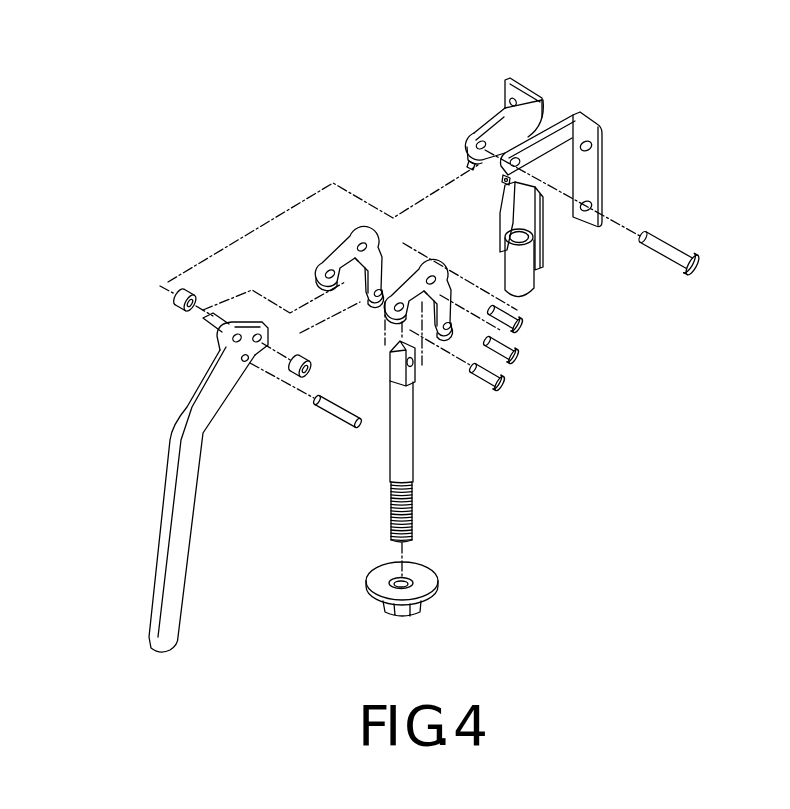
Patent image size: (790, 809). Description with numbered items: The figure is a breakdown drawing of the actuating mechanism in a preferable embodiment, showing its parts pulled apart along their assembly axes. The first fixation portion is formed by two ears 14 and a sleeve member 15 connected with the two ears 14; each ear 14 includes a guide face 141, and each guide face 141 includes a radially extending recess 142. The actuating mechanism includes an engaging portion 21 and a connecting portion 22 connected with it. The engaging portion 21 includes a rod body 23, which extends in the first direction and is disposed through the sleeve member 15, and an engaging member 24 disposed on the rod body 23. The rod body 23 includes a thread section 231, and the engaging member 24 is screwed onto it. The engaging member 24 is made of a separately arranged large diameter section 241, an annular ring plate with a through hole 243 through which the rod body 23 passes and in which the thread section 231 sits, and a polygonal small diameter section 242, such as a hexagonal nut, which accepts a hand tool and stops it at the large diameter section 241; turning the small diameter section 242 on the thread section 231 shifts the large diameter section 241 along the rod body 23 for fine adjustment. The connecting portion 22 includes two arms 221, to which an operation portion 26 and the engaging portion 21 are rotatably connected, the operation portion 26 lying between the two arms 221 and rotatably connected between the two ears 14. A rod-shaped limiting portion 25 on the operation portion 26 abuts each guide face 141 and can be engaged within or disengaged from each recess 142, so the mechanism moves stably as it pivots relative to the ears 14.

The ears 14 is at (541, 150).
The guide face 141 is at (541, 104).
The recess 142 is at (504, 181).
The sleeve member 15 is at (530, 286).
The engaging portion 21 is at (466, 539).
The connecting portion 22 is at (369, 210).
The arms 221 is at (343, 256).
The rod body 23 is at (447, 441).
The thread section 231 is at (410, 502).
The engaging member 24 is at (432, 612).
The large diameter section 241 is at (440, 590).
The small diameter section 242 is at (417, 612).
The through hole 243 is at (394, 581).
The limiting portion 25 is at (330, 409).
The operation portion 26 is at (180, 515).